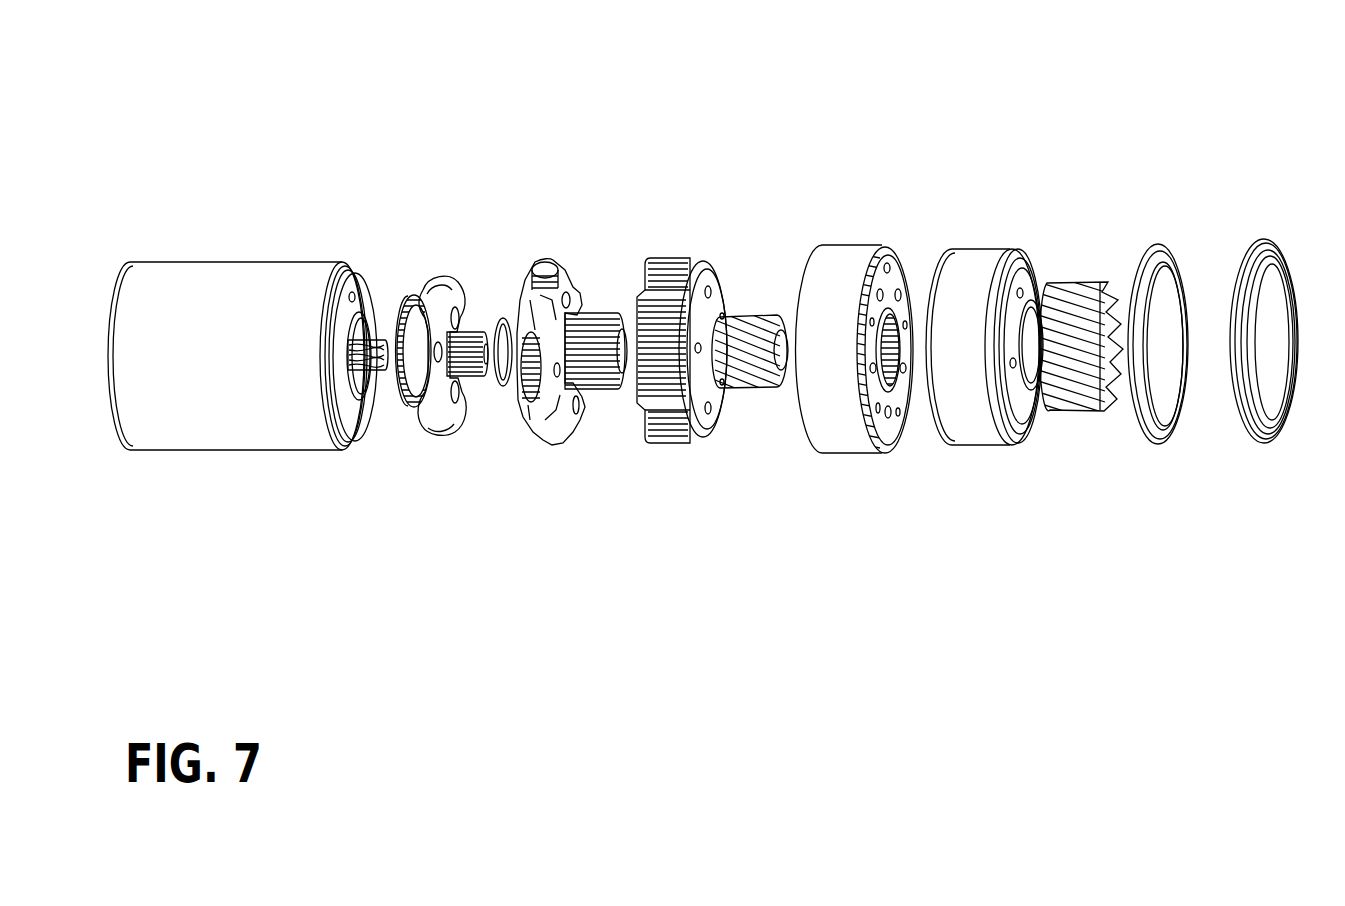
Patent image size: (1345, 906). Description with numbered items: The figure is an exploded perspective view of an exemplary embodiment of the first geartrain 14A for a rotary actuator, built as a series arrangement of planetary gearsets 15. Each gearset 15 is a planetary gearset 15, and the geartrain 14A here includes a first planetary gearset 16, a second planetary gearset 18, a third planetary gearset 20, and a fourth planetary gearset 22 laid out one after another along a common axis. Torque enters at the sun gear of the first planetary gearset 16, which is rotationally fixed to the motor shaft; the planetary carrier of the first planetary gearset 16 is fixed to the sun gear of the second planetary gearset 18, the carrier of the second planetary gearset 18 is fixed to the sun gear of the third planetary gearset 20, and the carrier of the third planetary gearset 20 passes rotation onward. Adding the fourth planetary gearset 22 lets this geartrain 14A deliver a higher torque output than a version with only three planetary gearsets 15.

The first geartrain 14A is at (908, 100).
The planetary gearset 15 is at (648, 364).
The first planetary gearset 16 is at (433, 437).
The second planetary gearset 18 is at (545, 263).
The third planetary gearset 20 is at (672, 437).
The fourth planetary gearset 22 is at (840, 262).